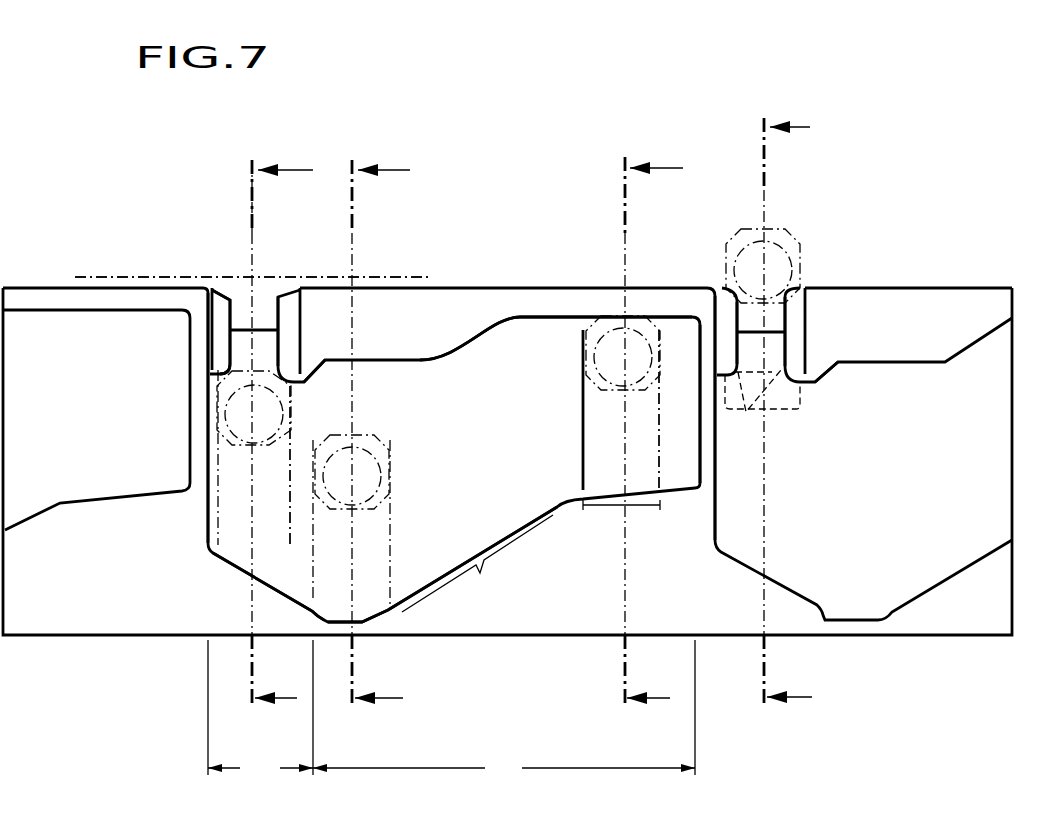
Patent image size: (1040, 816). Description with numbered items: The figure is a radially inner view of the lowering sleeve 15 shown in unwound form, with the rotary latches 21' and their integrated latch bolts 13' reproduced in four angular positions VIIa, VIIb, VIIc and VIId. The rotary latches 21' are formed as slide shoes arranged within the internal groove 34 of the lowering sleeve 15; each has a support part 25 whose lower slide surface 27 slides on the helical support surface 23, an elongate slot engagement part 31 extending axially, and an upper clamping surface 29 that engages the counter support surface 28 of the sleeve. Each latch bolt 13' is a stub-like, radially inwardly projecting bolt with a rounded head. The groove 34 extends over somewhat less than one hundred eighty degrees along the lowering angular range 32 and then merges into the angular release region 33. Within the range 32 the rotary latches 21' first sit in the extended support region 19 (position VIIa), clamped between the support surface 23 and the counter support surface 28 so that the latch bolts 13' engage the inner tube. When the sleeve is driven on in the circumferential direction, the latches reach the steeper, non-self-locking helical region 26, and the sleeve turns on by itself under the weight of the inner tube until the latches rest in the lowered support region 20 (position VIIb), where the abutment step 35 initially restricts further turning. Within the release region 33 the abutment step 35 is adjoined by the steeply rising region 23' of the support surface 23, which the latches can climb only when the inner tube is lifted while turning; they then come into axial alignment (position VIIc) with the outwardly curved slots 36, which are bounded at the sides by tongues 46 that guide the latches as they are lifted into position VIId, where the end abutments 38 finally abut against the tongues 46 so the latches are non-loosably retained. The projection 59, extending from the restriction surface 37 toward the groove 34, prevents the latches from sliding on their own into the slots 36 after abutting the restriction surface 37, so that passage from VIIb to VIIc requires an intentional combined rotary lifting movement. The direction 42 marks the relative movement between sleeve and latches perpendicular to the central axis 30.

The latch bolt 13' is at (536, 360).
The lowering sleeve 15 is at (555, 620).
The extended support region 19 is at (621, 522).
The lowered support region 20 is at (370, 628).
The rotary latch 21' is at (428, 379).
The support surface 23 is at (472, 546).
The rising region 23' is at (262, 535).
The support part 25 is at (248, 546).
The helical region 26 is at (477, 563).
The lower slide surface 27 is at (268, 548).
The counter support surface 28 is at (633, 318).
The upper clamping surface 29 is at (596, 324).
The central axis 30 is at (255, 262).
The elongate slot engagement part 31 is at (205, 430).
The lowering angular range 32 is at (504, 712).
The angular release region 33 is at (260, 712).
The internal groove 34 is at (490, 423).
The abutment step 35 is at (325, 628).
The outwardly curved slot 36 is at (266, 292).
The restriction surface 37 is at (487, 340).
The end abutment 38 is at (742, 395).
The direction perpendicular to the central axis 42 is at (414, 276).
The tongue 46 is at (222, 335).
The projection 59 is at (330, 368).
The angular position VIIa is at (669, 439).
The angular position VIIb is at (399, 439).
The angular position VIIc is at (297, 439).
The angular position VIId is at (811, 419).